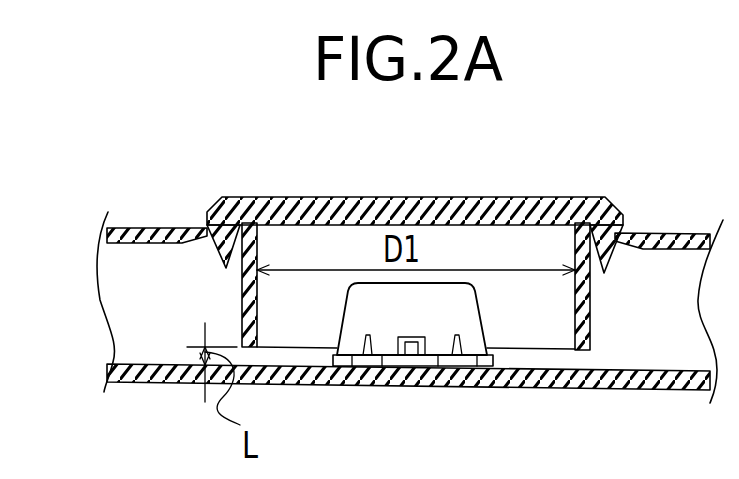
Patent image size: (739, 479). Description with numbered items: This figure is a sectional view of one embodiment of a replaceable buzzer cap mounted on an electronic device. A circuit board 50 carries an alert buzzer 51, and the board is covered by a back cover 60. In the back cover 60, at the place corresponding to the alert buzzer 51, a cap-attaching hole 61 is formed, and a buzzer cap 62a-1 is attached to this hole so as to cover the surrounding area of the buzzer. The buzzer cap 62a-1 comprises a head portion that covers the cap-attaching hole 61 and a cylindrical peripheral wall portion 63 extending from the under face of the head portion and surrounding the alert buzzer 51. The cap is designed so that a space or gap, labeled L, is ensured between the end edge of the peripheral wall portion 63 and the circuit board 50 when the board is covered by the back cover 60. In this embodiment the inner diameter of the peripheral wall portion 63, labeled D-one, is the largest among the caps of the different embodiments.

The circuit board 50 is at (568, 380).
The alert buzzer 51 is at (487, 310).
The back cover 60 is at (688, 234).
The cap-attaching hole 61 is at (617, 215).
The buzzer cap 62a-1 is at (400, 197).
The peripheral wall portion 63 is at (240, 290).